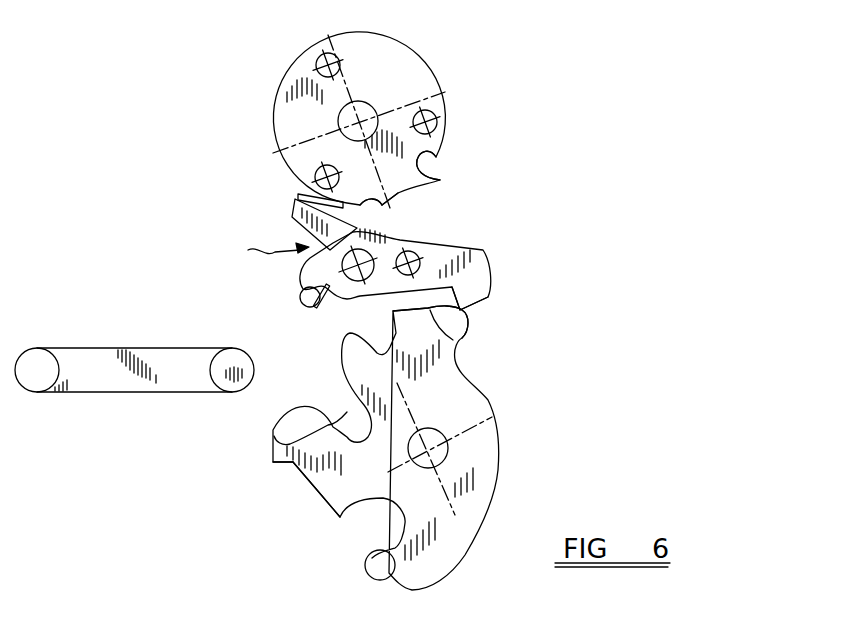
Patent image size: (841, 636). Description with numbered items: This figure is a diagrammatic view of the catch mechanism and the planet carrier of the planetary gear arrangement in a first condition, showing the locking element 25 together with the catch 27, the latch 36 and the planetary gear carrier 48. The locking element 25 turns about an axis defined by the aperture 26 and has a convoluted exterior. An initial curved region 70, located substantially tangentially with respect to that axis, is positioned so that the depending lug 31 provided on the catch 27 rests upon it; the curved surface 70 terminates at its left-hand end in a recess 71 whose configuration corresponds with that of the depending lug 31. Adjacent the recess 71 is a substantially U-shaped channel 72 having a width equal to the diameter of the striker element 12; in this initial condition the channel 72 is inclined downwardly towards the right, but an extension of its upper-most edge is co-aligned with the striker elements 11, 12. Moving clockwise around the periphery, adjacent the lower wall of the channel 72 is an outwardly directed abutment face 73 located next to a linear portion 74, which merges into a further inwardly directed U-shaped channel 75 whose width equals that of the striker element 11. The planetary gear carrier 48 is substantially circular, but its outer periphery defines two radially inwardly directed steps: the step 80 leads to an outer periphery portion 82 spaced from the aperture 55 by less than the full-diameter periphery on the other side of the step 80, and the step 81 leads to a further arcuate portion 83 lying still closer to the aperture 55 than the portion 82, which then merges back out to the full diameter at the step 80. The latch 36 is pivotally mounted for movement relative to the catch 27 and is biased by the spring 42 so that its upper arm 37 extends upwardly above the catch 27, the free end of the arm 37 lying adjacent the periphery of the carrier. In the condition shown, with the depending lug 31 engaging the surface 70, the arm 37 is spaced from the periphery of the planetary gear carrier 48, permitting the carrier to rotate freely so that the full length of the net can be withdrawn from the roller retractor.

The striker element 11 is at (43, 362).
The striker element 12 is at (240, 362).
The locking element 25 is at (500, 433).
The aperture 26 is at (433, 428).
The catch 27 is at (420, 234).
The depending lug 31 is at (478, 289).
The latch 36 is at (264, 248).
The arm 37 is at (293, 214).
The spring 42 is at (330, 309).
The planetary gear carrier 48 is at (400, 57).
The aperture 55 is at (373, 107).
The curved region 70 is at (455, 338).
The recess 71 is at (470, 367).
The U-shaped channel 72 is at (274, 434).
The abutment face 73 is at (283, 462).
The linear portion 74 is at (316, 490).
The U-shaped channel 75 is at (380, 580).
The step 80 is at (298, 196).
The step 81 is at (400, 188).
The outer periphery portion 82 is at (372, 199).
The arcuate portion 83 is at (436, 148).